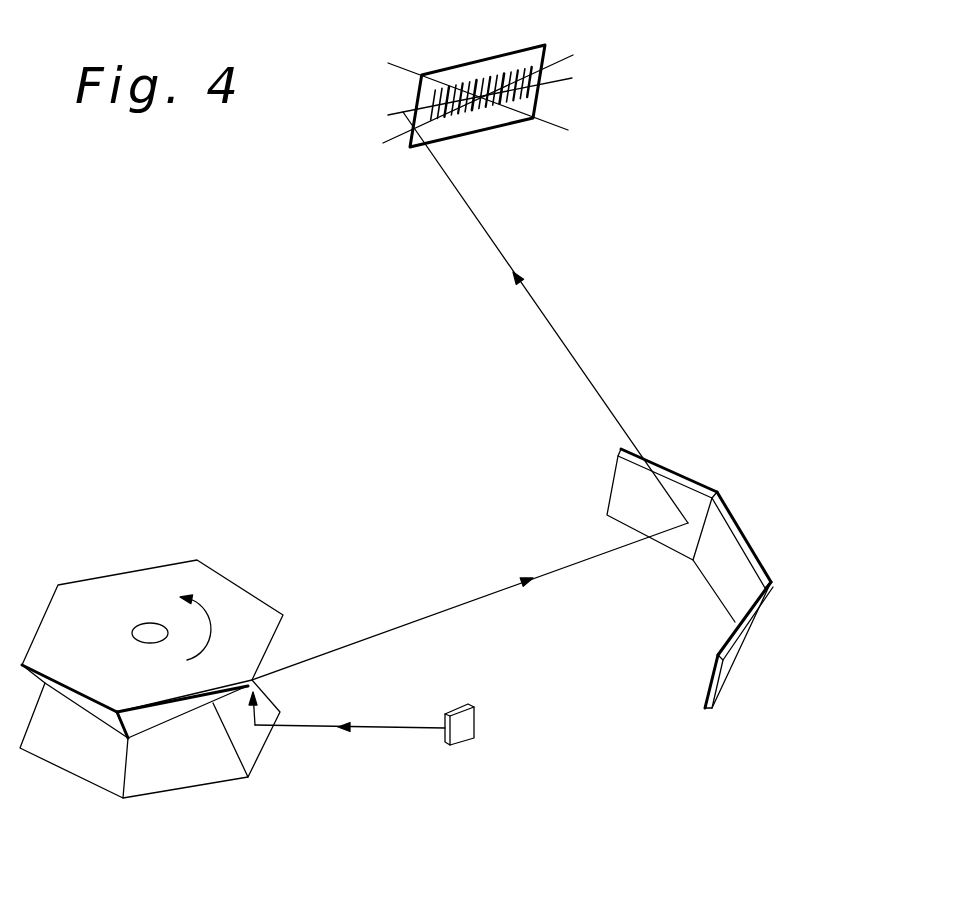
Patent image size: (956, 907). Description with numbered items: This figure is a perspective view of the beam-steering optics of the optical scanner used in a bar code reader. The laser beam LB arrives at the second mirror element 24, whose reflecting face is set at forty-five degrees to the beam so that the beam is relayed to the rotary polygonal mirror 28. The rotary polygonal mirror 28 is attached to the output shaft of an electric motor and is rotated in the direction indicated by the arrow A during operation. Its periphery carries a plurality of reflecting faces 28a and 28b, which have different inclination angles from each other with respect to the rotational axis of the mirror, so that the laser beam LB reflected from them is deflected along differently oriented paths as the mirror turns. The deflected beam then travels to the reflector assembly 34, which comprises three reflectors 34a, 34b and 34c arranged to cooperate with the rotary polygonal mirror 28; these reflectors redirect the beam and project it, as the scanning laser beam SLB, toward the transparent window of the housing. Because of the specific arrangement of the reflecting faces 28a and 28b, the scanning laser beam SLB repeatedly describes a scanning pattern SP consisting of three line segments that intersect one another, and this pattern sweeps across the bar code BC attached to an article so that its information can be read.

The second mirror element 24 is at (465, 735).
The rotary polygonal mirror 28 is at (178, 669).
The reflecting face 28a is at (72, 693).
The reflecting face 28b is at (78, 768).
The reflector assembly 34 is at (726, 562).
The reflector 34a is at (738, 662).
The reflector 34b is at (757, 562).
The reflector 34c is at (678, 475).
The arrow A is at (213, 623).
The laser beam LB is at (450, 608).
The scanning laser beam SLB is at (563, 342).
The bar code BC is at (482, 67).
The scanning pattern SP is at (583, 64).